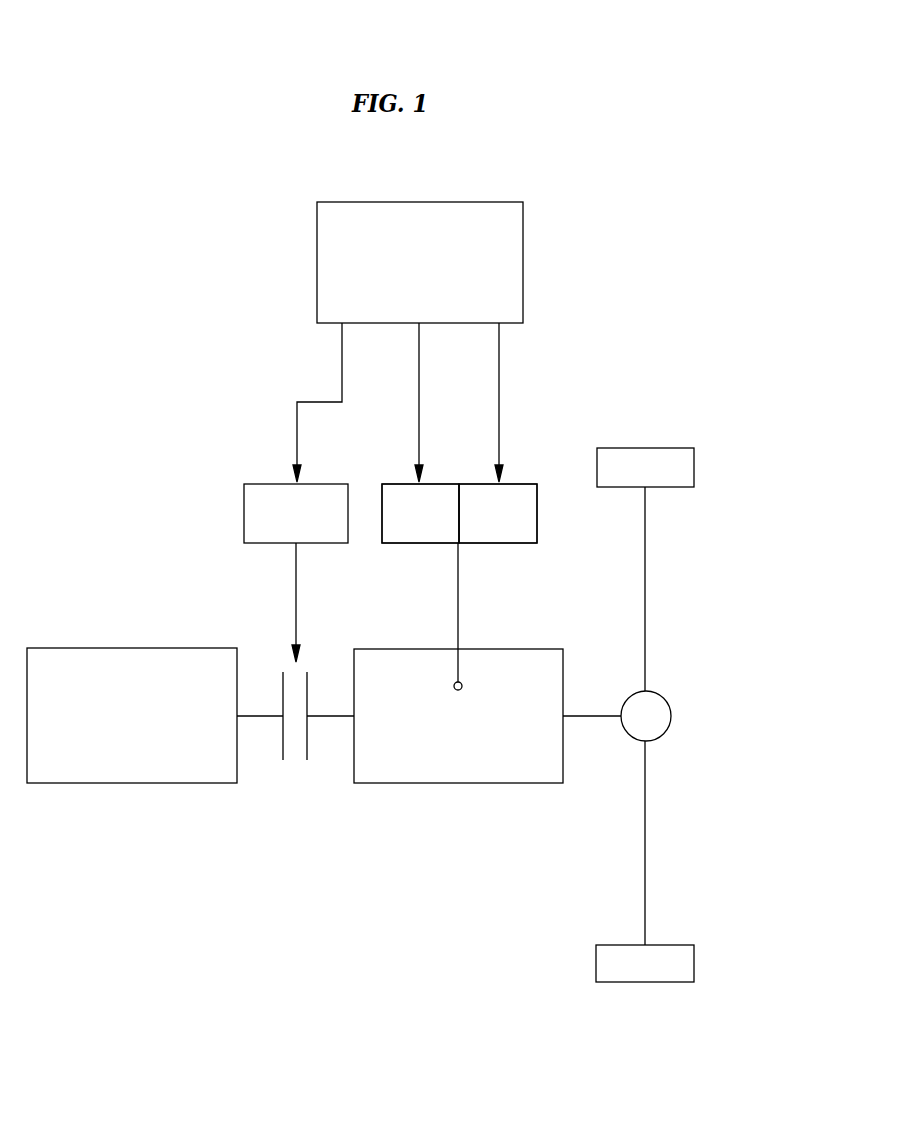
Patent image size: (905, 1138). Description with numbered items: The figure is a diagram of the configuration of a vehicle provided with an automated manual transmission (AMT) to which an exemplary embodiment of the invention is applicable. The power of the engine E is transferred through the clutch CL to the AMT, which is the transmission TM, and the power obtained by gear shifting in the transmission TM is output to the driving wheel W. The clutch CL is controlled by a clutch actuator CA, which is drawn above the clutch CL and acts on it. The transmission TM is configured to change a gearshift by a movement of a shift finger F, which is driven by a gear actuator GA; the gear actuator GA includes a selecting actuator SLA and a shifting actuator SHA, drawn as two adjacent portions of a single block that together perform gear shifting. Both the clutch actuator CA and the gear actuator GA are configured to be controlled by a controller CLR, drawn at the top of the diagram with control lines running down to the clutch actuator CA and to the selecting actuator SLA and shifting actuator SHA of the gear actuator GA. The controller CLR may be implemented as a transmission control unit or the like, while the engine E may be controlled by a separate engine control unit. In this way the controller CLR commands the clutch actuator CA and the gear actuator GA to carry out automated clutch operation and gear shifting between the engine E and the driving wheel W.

The controller CLR is at (317, 262).
The clutch actuator CA is at (244, 513).
The gear actuator GA is at (700, 347).
The selecting actuator SLA is at (435, 495).
The shifting actuator SHA is at (517, 500).
The shift finger F is at (462, 683).
The engine E is at (132, 783).
The clutch CL is at (296, 776).
The transmission TM is at (459, 783).
The driving wheel W is at (695, 465).